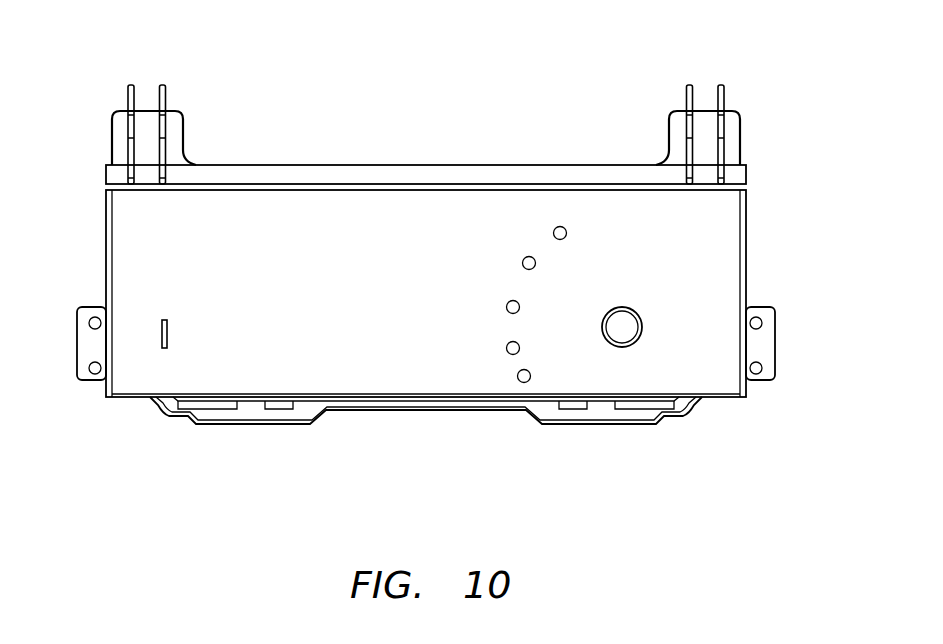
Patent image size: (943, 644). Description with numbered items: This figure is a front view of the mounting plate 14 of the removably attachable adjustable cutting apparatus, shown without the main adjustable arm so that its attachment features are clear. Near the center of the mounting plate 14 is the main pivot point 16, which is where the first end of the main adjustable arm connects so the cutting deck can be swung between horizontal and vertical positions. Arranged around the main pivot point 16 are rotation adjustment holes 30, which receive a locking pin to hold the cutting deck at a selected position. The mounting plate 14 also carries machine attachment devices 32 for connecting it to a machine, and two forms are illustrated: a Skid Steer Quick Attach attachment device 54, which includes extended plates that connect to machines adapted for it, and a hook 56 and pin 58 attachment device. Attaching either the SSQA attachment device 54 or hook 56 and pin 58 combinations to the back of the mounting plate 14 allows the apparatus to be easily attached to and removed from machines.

The mounting plate 14 is at (413, 295).
The main pivot point 16 is at (640, 320).
The rotation adjustment holes 30 is at (536, 263).
The machine attachment devices 32 is at (214, 91).
The Skid Steer Quick Attach (SSQA) attachment device 54 is at (547, 173).
The hook 56 is at (128, 94).
The pin 58 is at (77, 335).